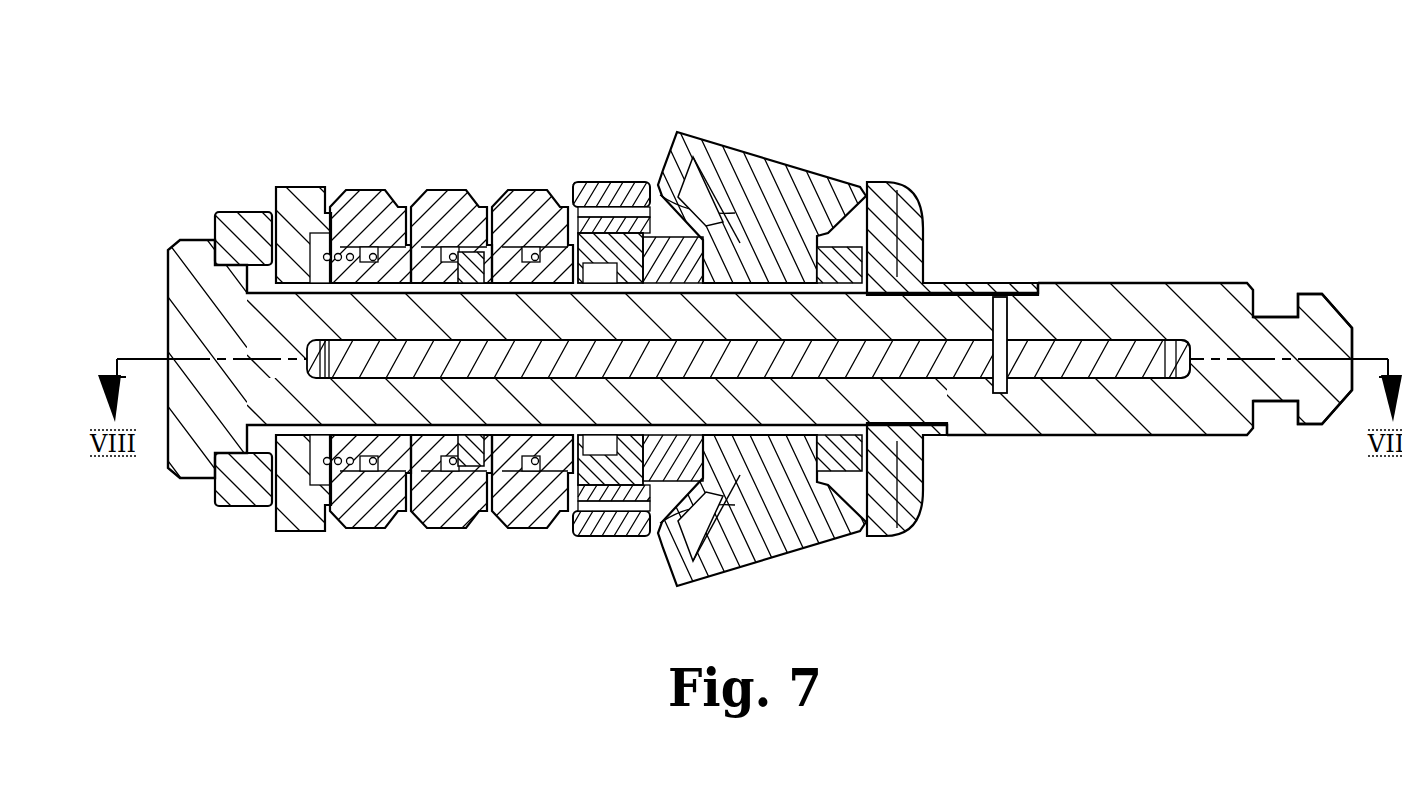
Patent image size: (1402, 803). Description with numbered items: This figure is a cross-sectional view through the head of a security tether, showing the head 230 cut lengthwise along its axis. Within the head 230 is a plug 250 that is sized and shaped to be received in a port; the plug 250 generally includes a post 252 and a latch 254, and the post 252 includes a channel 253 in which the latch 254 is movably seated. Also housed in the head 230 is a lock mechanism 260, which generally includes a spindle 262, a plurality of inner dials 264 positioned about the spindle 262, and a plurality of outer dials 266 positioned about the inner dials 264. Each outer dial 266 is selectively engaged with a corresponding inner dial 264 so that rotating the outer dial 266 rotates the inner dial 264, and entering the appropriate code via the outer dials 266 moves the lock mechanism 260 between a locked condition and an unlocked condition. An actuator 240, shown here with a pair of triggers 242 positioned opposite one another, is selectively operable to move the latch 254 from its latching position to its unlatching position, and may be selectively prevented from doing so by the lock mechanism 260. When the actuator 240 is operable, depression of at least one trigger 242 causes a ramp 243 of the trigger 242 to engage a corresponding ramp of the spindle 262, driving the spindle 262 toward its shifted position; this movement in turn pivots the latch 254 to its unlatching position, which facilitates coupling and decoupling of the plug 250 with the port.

The valve body 230 is at (130, 142).
The actuator 240 is at (753, 324).
The trigger 242 is at (820, 175).
The ramp 243 is at (752, 232).
The plug 250 is at (1079, 217).
The post 252 is at (1202, 282).
The channel 253 is at (1122, 350).
The latch 254 is at (977, 373).
The lock mechanism 260 is at (483, 291).
The spindle 262 is at (632, 370).
The inner dial 264 is at (470, 272).
The outer dial 266 is at (450, 187).